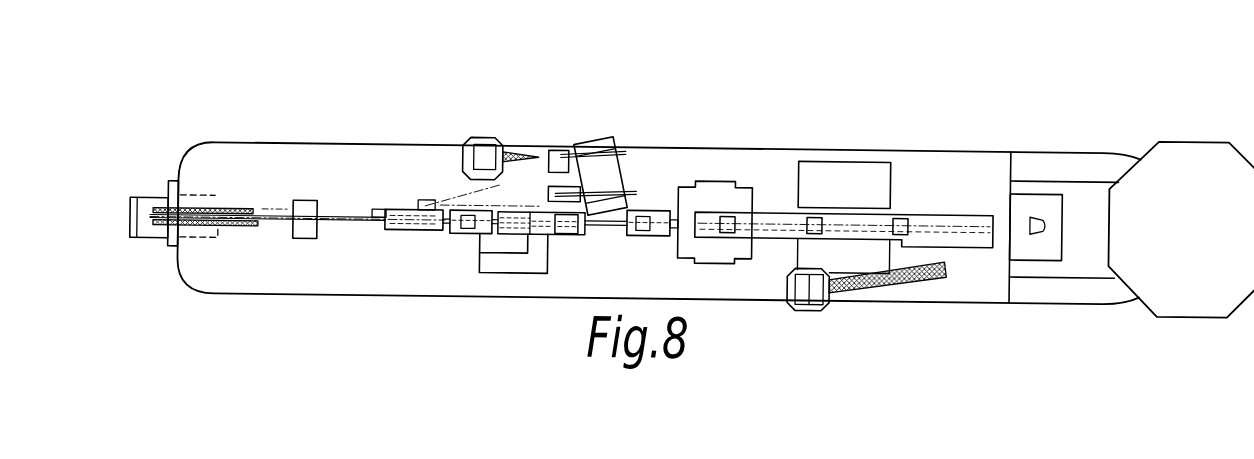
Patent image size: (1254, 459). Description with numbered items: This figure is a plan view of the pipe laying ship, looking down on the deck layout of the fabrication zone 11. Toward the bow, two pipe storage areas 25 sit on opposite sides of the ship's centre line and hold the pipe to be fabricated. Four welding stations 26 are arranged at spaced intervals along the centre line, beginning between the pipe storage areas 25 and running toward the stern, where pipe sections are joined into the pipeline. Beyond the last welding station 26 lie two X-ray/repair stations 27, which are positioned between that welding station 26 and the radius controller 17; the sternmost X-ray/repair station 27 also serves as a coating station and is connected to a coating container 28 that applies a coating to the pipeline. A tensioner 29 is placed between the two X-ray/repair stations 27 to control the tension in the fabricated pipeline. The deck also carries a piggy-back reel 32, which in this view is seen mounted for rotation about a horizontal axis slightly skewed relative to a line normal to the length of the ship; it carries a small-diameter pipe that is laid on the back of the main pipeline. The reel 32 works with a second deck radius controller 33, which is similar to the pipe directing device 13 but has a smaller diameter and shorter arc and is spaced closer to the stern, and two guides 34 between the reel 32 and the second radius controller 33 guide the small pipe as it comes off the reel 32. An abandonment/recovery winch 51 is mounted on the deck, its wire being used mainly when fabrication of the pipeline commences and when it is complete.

The fabrication zone 11 is at (709, 150).
The pipe directing device 13 is at (415, 160).
The radius controller 17 is at (258, 169).
The pipe storage area 25 is at (868, 216).
The welding station 26 is at (774, 163).
The X-ray/repair station 27 is at (515, 216).
The coating container 28 is at (513, 288).
The tensioner 29 is at (539, 161).
The piggy-back reel 32 is at (594, 152).
The second deck radius controller 33 is at (372, 154).
The guide 34 is at (488, 151).
The abandonment/recovery winch 51 is at (290, 165).